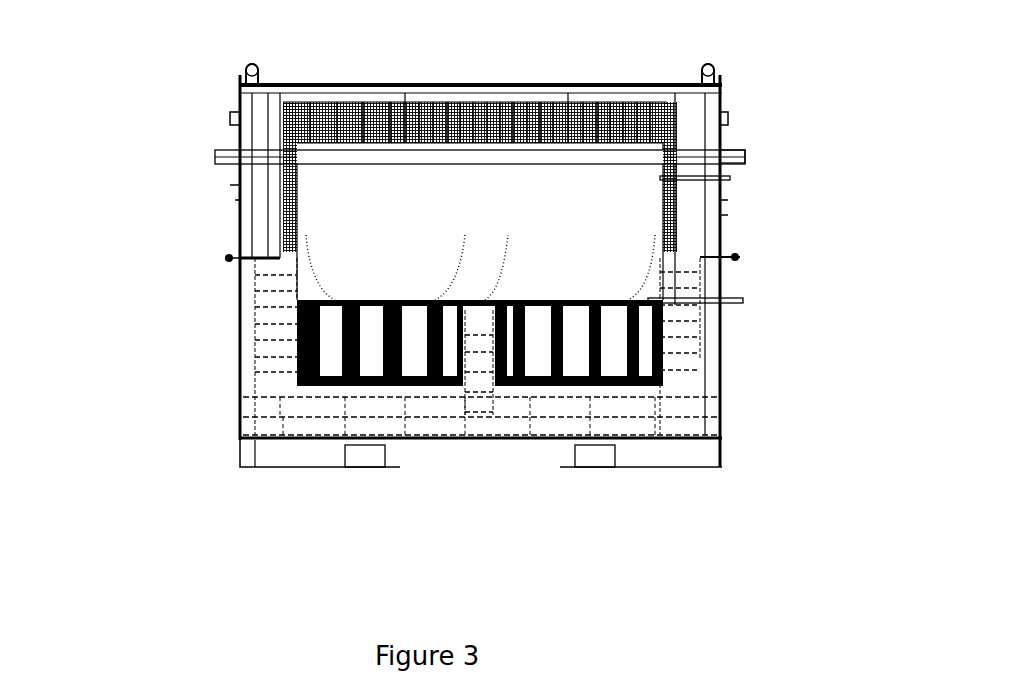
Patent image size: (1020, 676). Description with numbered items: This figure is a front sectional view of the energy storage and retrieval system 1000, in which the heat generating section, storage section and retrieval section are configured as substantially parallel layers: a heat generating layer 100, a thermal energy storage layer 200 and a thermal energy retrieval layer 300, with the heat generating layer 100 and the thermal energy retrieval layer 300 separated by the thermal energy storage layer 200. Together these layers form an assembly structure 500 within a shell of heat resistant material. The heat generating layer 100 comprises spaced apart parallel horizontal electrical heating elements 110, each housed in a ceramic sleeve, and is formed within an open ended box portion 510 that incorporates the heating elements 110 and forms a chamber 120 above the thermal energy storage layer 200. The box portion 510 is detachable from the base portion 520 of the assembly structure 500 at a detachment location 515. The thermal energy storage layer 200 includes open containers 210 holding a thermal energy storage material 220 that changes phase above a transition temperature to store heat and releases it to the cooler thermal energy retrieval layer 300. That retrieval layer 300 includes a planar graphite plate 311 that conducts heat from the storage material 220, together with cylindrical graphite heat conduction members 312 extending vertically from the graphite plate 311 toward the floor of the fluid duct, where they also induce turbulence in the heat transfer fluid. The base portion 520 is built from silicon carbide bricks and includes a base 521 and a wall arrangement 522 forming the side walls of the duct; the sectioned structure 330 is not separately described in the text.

The energy storage and retrieval system 1000 is at (168, 63).
The heat generating layer 100 is at (762, 153).
The electrical heating elements 110 is at (360, 148).
The chamber 120 is at (470, 178).
The thermal energy storage layer 200 is at (650, 247).
The open containers 210 is at (404, 239).
The thermal energy storage material 220 is at (340, 253).
The thermal energy retrieval layer 300 is at (665, 357).
The graphite plate 311 is at (505, 302).
The heat conduction members 312 is at (598, 385).
The support member 330 is at (300, 358).
The assembly structure 500 is at (232, 237).
The box portion 510 is at (640, 83).
The detachment location 515 is at (700, 260).
The base portion 520 is at (243, 417).
The base 521 is at (405, 425).
The wall arrangement 522 is at (283, 363).